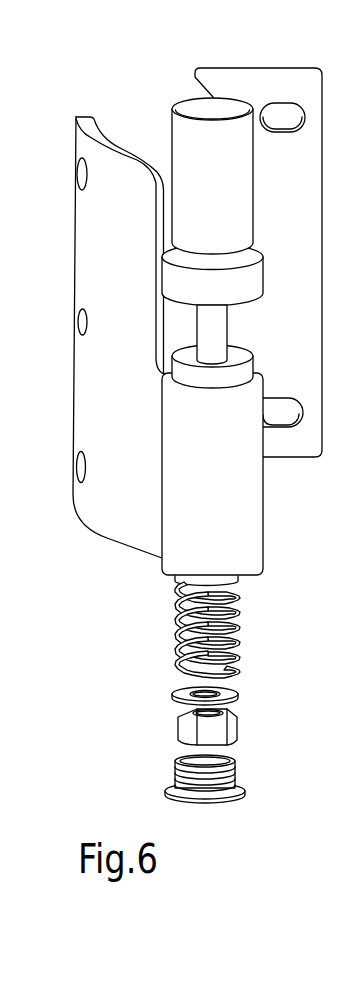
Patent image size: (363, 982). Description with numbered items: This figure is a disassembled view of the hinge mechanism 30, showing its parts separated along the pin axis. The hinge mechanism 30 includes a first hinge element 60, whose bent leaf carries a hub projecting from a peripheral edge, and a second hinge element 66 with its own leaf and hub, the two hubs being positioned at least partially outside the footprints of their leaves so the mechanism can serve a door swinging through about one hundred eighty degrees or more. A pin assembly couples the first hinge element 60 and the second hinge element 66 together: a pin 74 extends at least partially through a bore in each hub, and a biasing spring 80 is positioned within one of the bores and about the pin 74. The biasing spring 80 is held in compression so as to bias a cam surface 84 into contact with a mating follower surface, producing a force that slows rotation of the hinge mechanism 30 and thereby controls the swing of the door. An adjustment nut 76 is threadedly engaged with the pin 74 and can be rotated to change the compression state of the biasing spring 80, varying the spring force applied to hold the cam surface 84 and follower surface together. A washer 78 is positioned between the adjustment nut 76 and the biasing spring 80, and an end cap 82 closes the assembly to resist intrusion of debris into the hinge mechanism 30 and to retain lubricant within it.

The hinge mechanism 30 is at (217, 434).
The first hinge element 60 is at (295, 263).
The second hinge element 66 is at (110, 528).
The pin 74 is at (217, 323).
The adjustment nut 76 is at (237, 728).
The washer 78 is at (238, 696).
The biasing spring 80 is at (237, 662).
The end cap 82 is at (236, 765).
The cam surface 84 is at (176, 350).